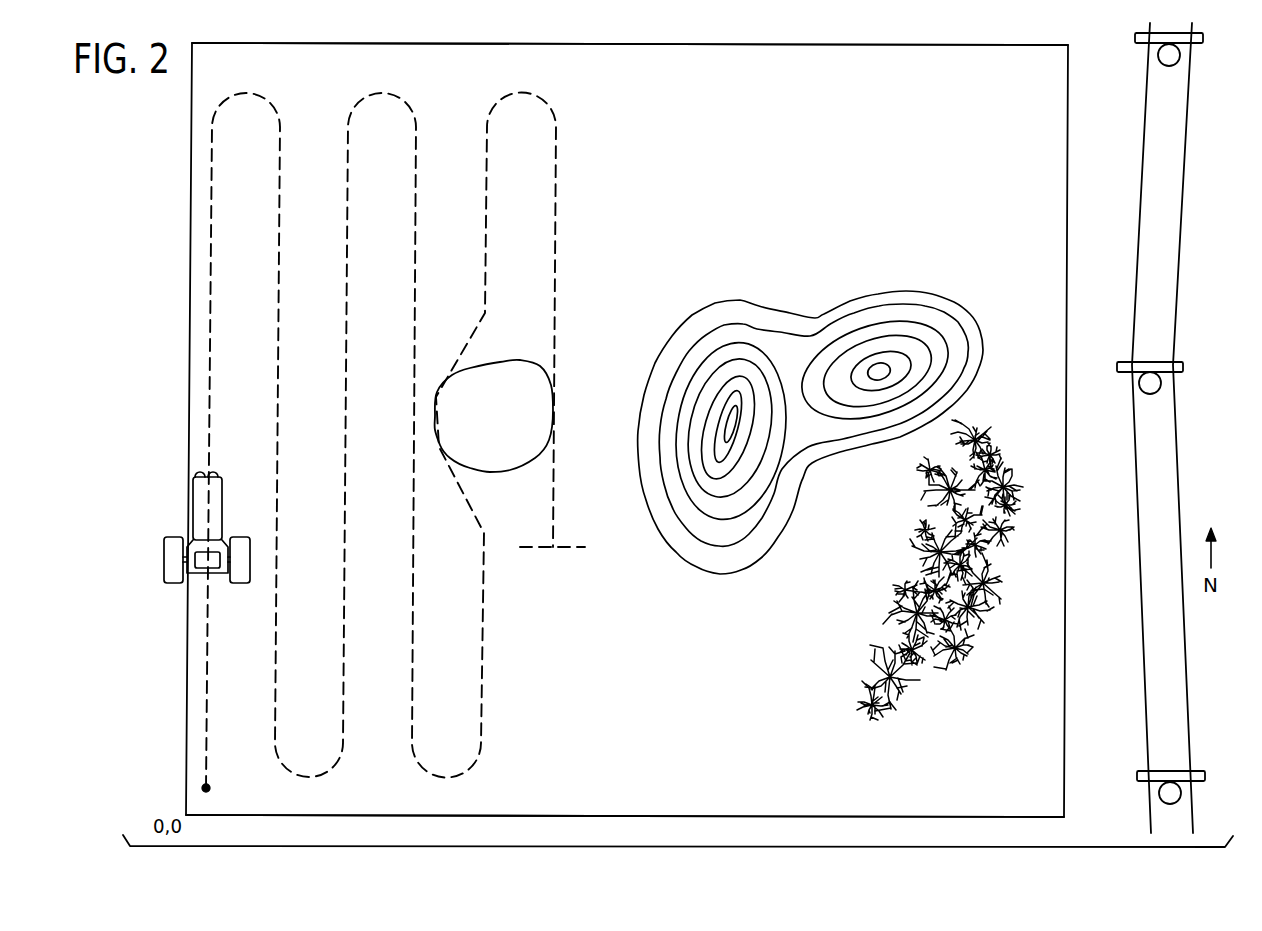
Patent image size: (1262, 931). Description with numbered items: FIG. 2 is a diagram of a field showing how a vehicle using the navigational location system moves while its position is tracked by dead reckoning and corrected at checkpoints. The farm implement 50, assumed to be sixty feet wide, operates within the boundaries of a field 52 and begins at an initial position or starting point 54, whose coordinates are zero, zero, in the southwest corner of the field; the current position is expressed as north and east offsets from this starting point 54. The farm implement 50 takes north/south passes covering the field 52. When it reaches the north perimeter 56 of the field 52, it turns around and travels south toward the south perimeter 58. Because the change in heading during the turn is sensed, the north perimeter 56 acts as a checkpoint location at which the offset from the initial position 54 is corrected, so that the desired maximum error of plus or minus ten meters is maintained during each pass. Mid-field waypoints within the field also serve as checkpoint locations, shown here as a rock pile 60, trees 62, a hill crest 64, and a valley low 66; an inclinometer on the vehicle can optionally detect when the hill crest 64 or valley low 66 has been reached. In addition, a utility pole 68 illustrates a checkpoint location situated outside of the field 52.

The farm implement 50 is at (193, 508).
The field 52 is at (1071, 113).
The initial position or starting point 54 is at (210, 788).
The north perimeter 56 is at (362, 43).
The south perimeter 58 is at (625, 817).
The rock pile 60 is at (530, 387).
The trees 62 is at (913, 697).
The hill crest 64 is at (725, 418).
The valley low 66 is at (890, 370).
The utility pole 68 is at (1161, 383).